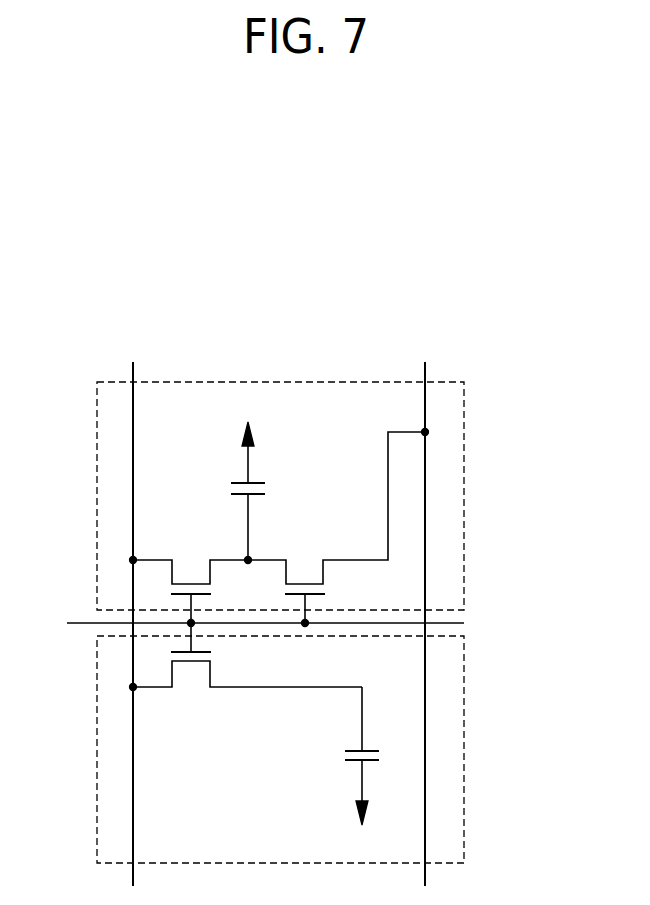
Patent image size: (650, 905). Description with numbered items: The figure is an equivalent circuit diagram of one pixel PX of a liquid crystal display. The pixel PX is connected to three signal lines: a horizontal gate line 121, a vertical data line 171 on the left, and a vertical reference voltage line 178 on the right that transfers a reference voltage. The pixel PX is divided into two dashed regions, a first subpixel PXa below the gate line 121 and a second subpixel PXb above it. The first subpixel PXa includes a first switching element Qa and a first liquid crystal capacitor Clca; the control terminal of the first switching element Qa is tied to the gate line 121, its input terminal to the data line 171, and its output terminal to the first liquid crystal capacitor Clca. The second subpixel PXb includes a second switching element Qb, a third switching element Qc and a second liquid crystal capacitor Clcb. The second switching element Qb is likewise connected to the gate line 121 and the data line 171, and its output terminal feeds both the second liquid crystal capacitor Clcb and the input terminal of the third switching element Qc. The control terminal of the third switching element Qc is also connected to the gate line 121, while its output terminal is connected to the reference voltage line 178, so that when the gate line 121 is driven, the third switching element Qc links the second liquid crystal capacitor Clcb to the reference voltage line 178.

The data line 171 is at (133, 409).
The reference voltage line 178 is at (425, 410).
The gate line 121 is at (80, 623).
The pixel PX is at (287, 345).
The first subpixel PXa is at (464, 750).
The second subpixel PXb is at (464, 497).
The first switching element Qa is at (246, 668).
The second switching element Qb is at (191, 579).
The third switching element Qc is at (305, 579).
The first liquid crystal capacitor Clca is at (335, 756).
The second liquid crystal capacitor Clcb is at (281, 491).